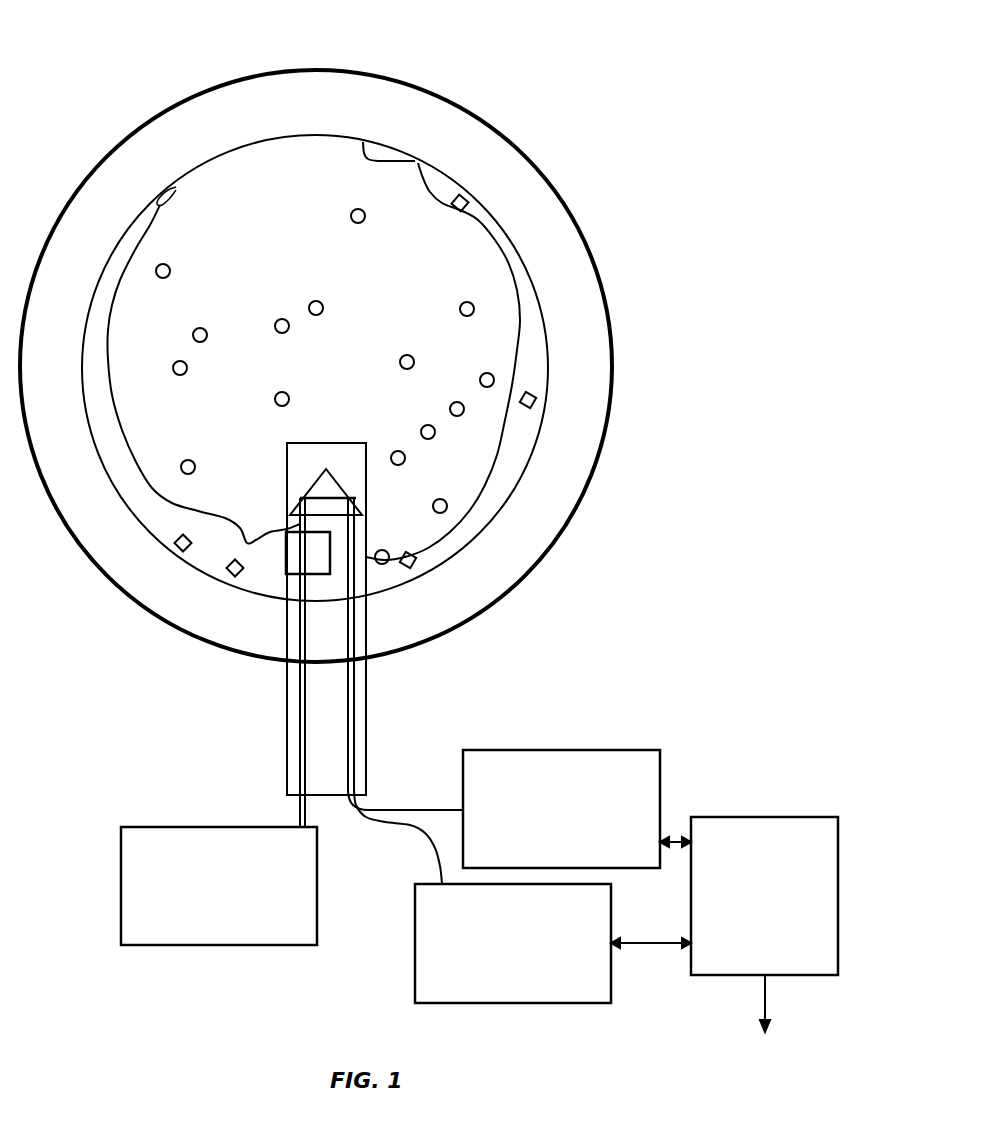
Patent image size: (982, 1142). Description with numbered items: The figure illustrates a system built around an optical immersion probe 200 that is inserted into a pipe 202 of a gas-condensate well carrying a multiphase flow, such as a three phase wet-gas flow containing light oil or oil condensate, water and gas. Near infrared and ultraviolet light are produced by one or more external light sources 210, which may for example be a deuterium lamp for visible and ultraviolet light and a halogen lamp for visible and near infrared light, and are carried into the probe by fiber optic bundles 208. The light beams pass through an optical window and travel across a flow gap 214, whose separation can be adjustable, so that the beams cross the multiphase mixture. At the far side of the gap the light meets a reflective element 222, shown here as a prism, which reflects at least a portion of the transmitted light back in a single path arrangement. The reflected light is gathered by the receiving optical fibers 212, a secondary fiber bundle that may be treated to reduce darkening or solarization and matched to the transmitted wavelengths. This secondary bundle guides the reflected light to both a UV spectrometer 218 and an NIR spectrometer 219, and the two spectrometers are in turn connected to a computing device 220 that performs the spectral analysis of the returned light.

The optical immersion probe 200 is at (526, 68).
The pipe 202 is at (603, 278).
The reflective element 222 is at (340, 487).
The flow gap 214 is at (300, 535).
The fiber optic bundles 208 is at (298, 812).
The receiving optical fibers 212 is at (378, 810).
The external light source 210 is at (219, 886).
The NIR spectrometer 219 is at (561, 809).
The UV spectrometer 218 is at (513, 943).
The computing device 220 is at (764, 896).